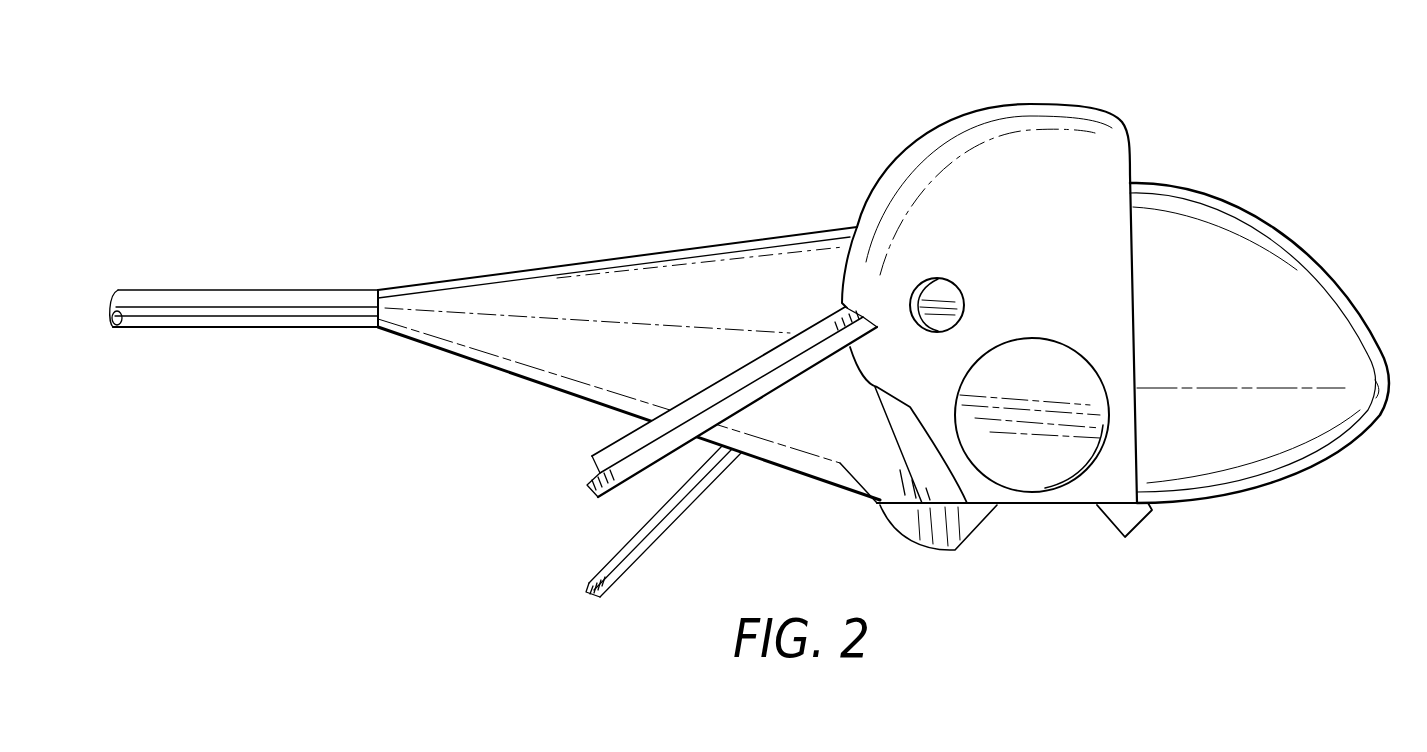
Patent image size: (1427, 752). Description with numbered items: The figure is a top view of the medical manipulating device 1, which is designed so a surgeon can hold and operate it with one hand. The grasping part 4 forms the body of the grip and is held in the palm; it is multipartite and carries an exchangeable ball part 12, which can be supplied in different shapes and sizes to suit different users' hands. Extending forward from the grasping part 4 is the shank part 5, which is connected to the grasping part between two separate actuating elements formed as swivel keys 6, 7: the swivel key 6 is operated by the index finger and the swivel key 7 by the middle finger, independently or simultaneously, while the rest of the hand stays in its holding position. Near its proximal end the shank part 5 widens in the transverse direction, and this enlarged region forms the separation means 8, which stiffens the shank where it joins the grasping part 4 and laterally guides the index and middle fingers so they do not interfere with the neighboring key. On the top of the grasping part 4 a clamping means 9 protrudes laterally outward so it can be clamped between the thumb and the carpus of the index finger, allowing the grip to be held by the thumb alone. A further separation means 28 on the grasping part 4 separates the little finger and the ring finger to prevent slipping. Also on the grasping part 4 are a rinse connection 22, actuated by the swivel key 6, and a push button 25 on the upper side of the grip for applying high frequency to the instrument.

The manipulating device 1 is at (763, 321).
The grasping part 4 is at (1273, 274).
The shank part 5 is at (297, 300).
The swivel key 6 is at (590, 469).
The swivel key 7 is at (612, 561).
The separation means 8 is at (553, 283).
The clamping means 9 is at (1097, 133).
The ball part 12 is at (1355, 323).
The rinse connection 22 is at (1135, 517).
The push button 25 is at (955, 300).
The separation means 28 is at (968, 527).